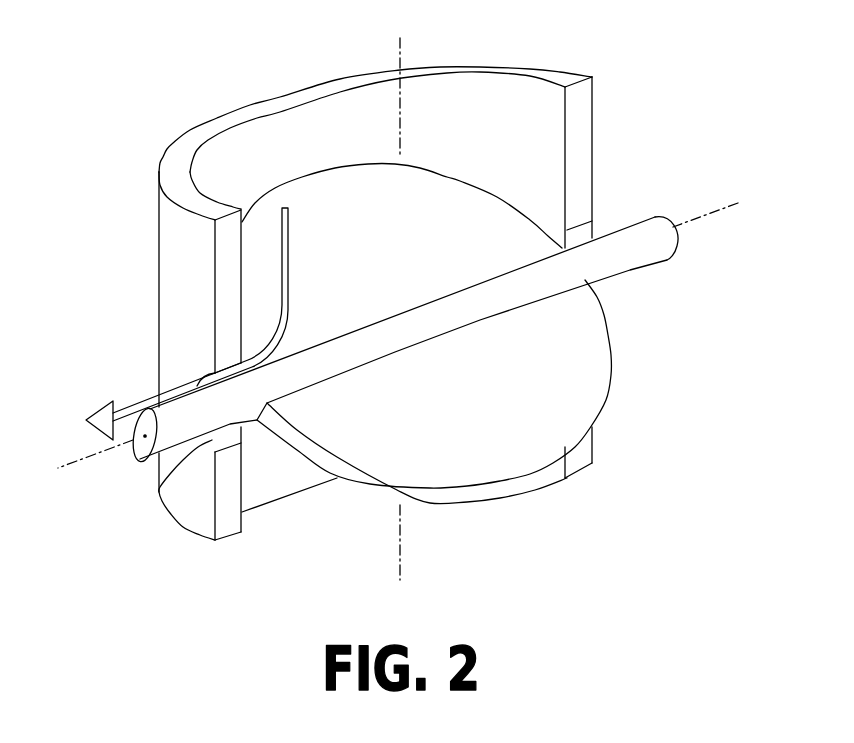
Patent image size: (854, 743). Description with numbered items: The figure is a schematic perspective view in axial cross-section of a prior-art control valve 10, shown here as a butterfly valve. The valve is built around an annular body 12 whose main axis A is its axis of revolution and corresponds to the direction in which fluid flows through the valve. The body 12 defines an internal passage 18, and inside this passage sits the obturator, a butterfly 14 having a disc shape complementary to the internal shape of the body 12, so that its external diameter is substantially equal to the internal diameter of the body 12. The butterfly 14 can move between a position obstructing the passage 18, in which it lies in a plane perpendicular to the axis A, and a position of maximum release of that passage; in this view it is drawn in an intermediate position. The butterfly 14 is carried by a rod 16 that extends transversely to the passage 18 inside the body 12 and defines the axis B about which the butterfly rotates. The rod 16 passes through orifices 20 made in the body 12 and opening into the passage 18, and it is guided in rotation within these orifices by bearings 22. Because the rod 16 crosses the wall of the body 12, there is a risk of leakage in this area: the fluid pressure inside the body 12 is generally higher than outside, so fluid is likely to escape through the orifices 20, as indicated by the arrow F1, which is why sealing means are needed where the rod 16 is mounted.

The control valve 10 is at (650, 70).
The annular body 12 is at (525, 77).
The butterfly 14 is at (468, 487).
The rod 16 is at (640, 232).
The internal passage 18 is at (430, 98).
The orifices 20 is at (578, 230).
The bearings 22 is at (158, 490).
The main axis A is at (398, 58).
The axis of rotation B is at (727, 202).
The arrow F1 is at (103, 400).